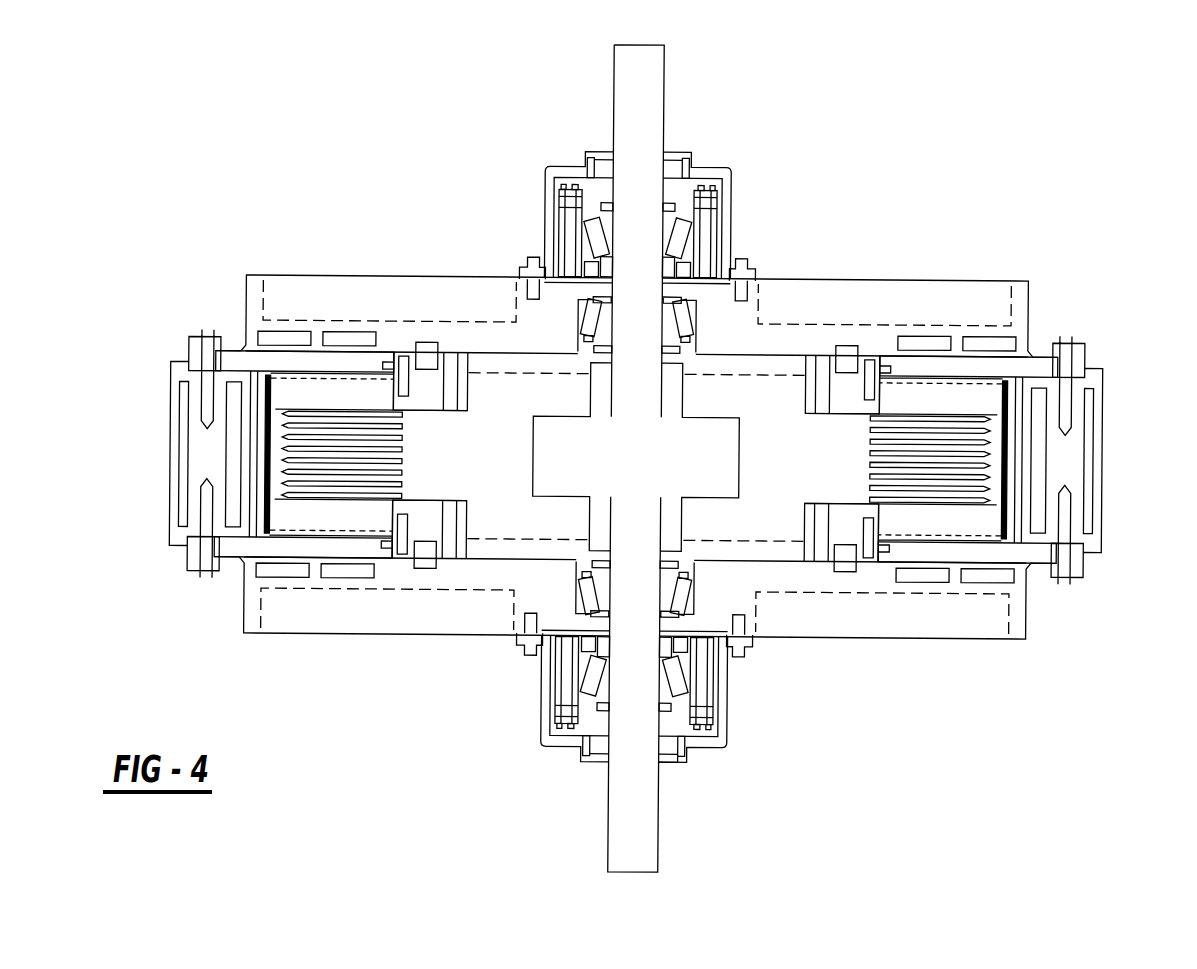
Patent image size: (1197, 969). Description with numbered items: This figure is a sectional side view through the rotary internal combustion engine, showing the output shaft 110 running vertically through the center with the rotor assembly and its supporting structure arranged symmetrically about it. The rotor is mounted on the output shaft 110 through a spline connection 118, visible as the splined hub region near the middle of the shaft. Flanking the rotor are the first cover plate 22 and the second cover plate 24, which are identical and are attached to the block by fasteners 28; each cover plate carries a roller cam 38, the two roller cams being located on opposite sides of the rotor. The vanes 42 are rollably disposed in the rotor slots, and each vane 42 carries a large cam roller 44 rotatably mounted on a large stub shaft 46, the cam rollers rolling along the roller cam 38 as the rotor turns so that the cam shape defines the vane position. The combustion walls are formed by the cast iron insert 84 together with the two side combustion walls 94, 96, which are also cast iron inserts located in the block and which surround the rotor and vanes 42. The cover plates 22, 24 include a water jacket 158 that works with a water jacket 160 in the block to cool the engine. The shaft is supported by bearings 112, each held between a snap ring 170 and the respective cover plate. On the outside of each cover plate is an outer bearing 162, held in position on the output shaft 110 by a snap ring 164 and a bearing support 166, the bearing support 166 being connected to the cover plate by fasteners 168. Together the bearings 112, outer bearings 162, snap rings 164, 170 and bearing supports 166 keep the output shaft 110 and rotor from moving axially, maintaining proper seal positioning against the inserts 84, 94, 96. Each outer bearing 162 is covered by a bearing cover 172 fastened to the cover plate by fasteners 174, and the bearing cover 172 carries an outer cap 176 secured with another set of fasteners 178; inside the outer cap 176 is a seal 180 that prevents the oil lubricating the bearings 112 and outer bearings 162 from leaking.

The first cover plate 22 is at (257, 283).
The second cover plate 24 is at (247, 617).
The fasteners 28 is at (210, 338).
The roller cam 38 is at (425, 350).
The vane 42 is at (345, 513).
The large cam roller 44 is at (467, 353).
The large stub shaft 46 is at (405, 360).
The cast iron insert 84 is at (1020, 373).
The side combustion wall 94 is at (235, 360).
The side combustion wall 96 is at (238, 560).
The output shaft 110 is at (652, 94).
The bearings 112 is at (682, 317).
The spline connection 118 is at (611, 400).
The water jacket 158 is at (925, 343).
The water jacket 160 is at (1085, 420).
The outer bearing 162 is at (596, 239).
The snap ring 164 is at (668, 208).
The bearing support 166 is at (553, 678).
The fasteners 168 is at (552, 725).
The snap ring 170 is at (670, 347).
The bearing cover 172 is at (585, 742).
The fasteners 174 is at (517, 650).
The outer cap 176 is at (612, 758).
The fasteners 178 is at (675, 760).
The seal 180 is at (660, 760).